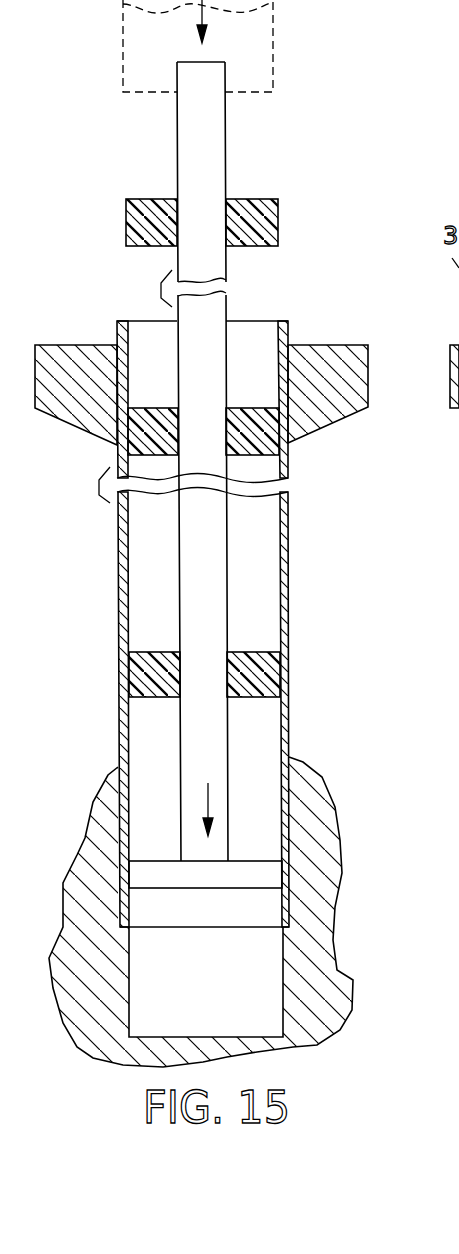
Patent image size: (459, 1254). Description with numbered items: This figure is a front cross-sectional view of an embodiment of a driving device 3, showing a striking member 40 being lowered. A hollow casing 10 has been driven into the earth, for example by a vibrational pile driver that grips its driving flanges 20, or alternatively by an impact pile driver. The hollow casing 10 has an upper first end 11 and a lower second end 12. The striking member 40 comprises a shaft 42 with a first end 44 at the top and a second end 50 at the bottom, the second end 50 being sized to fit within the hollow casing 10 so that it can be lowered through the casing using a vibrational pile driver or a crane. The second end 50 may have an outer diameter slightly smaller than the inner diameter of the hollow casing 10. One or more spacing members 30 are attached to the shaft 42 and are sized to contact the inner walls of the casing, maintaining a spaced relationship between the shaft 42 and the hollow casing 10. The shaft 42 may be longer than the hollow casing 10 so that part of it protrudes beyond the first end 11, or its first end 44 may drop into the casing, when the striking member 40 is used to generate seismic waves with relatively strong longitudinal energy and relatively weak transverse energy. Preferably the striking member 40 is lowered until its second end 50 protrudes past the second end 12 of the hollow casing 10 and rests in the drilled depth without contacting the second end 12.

The driving device 3 is at (60, 290).
The hollow casing 10 is at (224, 594).
The first end 11 is at (120, 320).
The second end 12 is at (288, 925).
The driving flanges 20 is at (327, 357).
The spacing members 30 is at (263, 216).
The striking member 40 is at (253, 608).
The shaft 42 is at (192, 453).
The first end 44 is at (198, 78).
The second end 50 is at (267, 874).